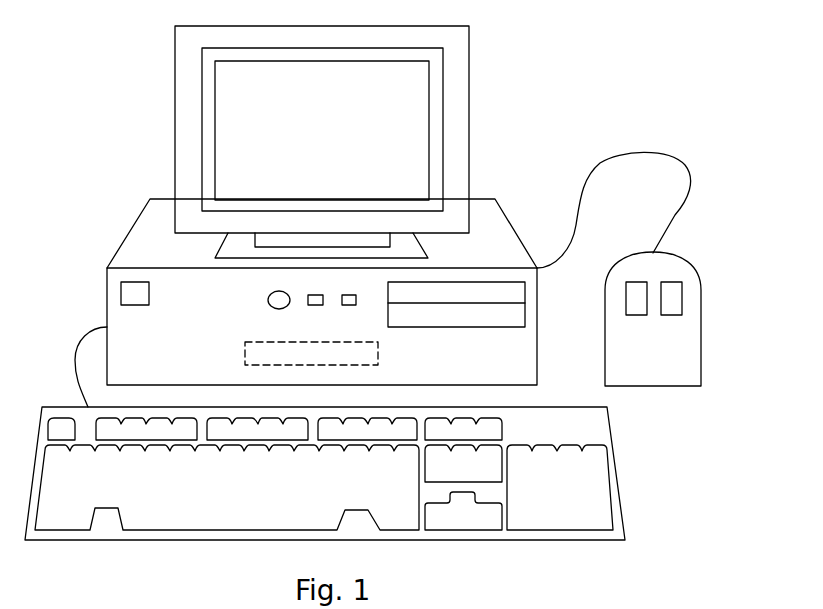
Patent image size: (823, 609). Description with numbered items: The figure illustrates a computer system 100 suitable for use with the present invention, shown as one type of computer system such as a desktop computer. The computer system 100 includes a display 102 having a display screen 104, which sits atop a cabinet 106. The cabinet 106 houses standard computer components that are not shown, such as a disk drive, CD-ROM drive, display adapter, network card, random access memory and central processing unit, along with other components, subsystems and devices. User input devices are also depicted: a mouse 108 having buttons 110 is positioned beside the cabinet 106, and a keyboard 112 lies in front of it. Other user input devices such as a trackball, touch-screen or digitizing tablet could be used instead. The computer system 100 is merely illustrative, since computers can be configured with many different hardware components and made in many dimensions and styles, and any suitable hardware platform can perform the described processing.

The computer system 100 is at (636, 76).
The display 102 is at (469, 128).
The display screen 104 is at (404, 120).
The cabinet 106 is at (510, 200).
The mouse 108 is at (682, 350).
The buttons 110 is at (635, 281).
The keyboard 112 is at (178, 540).